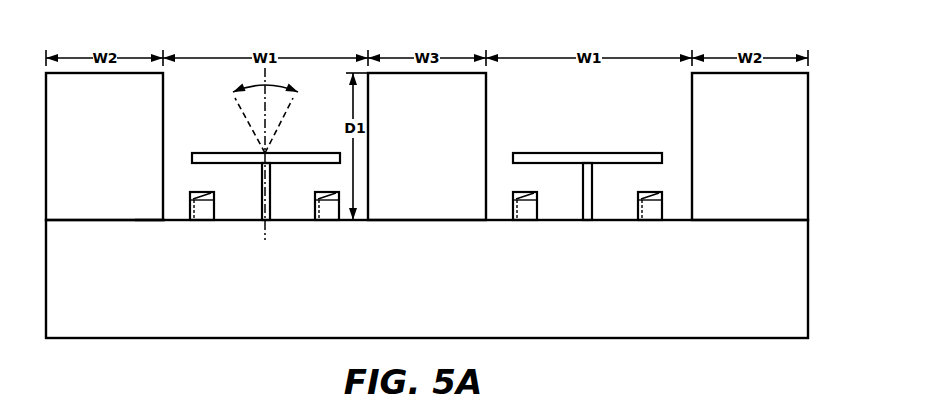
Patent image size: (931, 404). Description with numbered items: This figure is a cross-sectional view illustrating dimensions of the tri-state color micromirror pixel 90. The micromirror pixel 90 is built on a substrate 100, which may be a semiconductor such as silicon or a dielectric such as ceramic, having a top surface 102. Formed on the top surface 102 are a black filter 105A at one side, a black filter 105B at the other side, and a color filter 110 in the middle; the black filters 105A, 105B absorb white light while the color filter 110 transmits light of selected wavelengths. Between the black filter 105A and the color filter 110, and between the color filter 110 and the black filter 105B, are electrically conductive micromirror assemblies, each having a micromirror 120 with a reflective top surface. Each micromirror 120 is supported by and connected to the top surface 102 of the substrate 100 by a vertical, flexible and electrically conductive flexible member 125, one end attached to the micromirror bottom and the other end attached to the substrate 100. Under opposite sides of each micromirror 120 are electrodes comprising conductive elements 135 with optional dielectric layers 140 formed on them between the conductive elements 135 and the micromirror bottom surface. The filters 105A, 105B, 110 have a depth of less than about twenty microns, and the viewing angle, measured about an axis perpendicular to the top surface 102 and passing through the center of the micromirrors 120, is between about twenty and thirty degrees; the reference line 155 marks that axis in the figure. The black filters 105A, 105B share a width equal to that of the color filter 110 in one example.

The micromirror pixel 90 is at (834, 59).
The substrate 100 is at (427, 279).
The top surface 102 is at (148, 218).
The black filter 105A is at (104, 146).
The black filter 105B is at (750, 146).
The color filter 110 is at (427, 146).
The micromirror 120 is at (215, 152).
The flexible member 125 is at (261, 205).
The conductive element 135 is at (210, 210).
The dielectric layer 140 is at (190, 200).
The angle reference line 155 is at (265, 125).